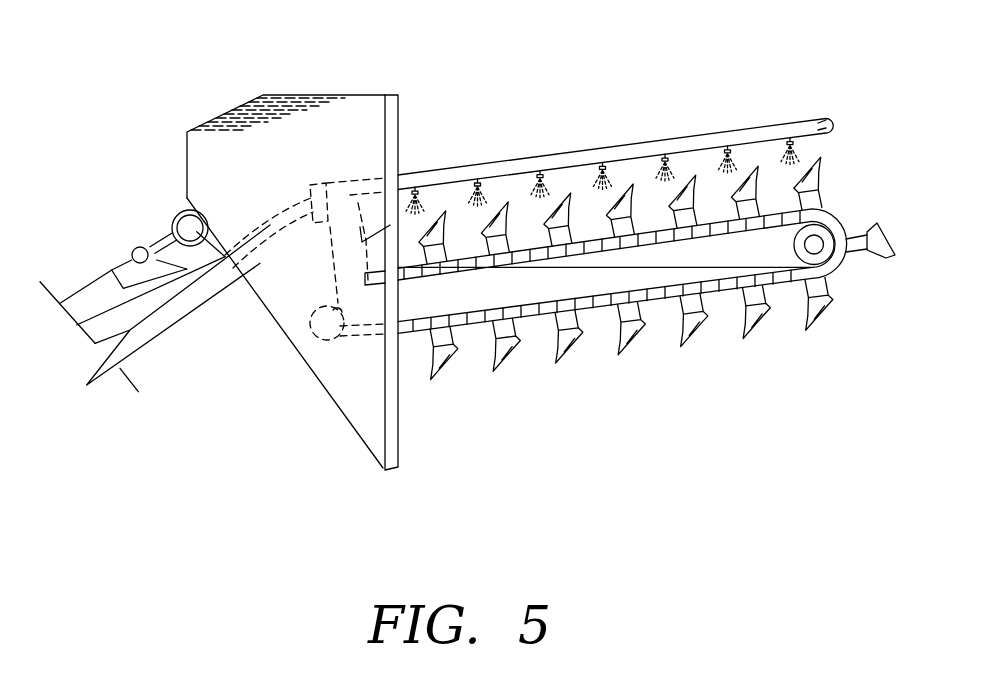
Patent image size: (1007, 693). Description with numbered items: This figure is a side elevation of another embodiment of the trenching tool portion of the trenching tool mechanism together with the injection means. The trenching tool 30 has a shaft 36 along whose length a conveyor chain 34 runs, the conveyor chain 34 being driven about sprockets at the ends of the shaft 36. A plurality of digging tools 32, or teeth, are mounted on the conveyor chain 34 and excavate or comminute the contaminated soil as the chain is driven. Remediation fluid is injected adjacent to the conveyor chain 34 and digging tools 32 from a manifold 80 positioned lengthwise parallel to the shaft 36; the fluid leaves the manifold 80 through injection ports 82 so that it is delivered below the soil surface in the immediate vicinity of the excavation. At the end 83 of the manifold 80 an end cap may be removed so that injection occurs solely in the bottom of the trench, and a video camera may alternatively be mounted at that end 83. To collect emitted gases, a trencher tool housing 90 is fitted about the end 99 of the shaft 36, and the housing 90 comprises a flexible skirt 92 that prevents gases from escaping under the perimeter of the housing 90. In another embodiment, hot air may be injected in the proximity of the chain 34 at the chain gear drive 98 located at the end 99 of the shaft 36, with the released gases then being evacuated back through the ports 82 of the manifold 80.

The trenching tool 30 is at (457, 156).
The digging tools 32 is at (567, 345).
The conveyor chain 34 is at (656, 302).
The shaft 36 is at (708, 257).
The manifold 80 is at (585, 158).
The injection ports 82 is at (730, 150).
The end of manifold 83 is at (840, 125).
The trencher tool housing 90 is at (213, 167).
The flexible skirt 92 is at (392, 420).
The chain gear drive 98 is at (312, 328).
The end of shaft 99 is at (320, 346).